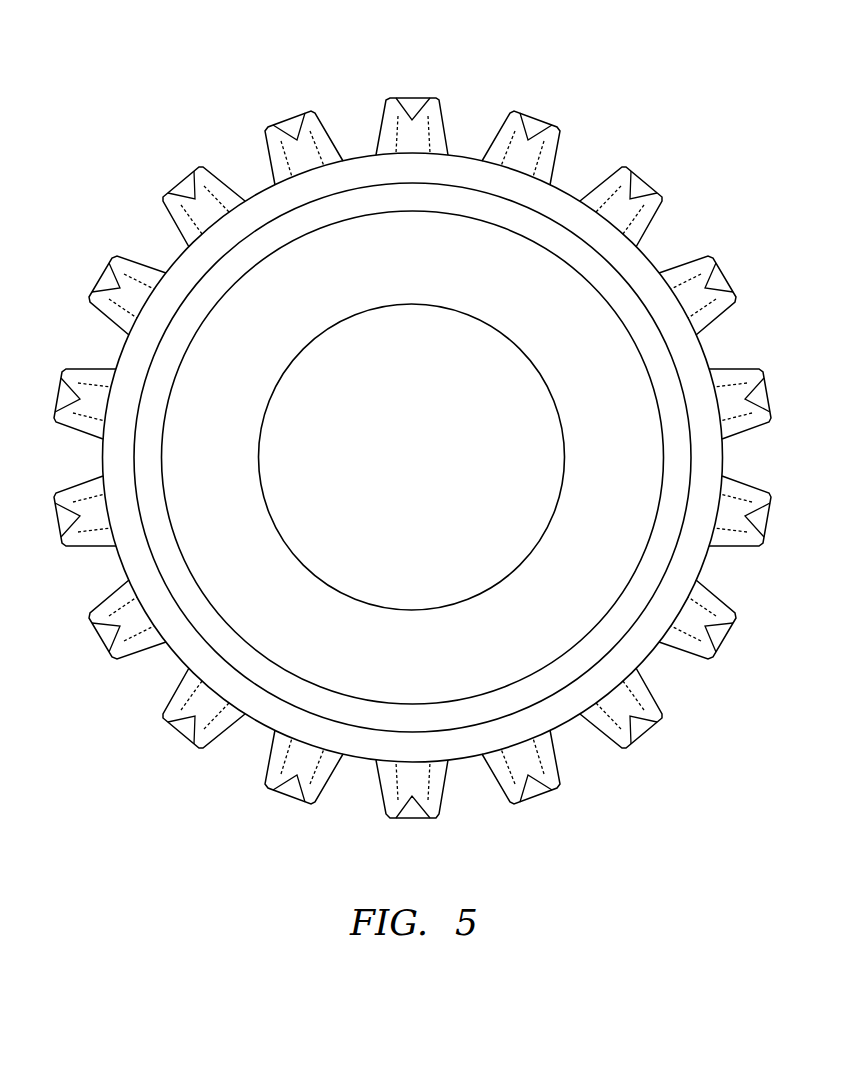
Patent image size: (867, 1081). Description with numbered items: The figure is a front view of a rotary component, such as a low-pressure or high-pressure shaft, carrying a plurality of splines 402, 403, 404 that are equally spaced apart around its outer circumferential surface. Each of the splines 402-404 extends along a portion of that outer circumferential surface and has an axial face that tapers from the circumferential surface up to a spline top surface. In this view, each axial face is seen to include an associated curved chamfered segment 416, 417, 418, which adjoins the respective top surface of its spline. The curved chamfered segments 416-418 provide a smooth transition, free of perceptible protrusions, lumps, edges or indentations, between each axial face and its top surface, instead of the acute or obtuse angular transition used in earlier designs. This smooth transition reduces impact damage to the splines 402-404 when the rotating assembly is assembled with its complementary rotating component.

The spline 402 is at (517, 175).
The spline 403 is at (413, 159).
The spline 404 is at (312, 171).
The curved chamfered segment 416 is at (297, 122).
The curved chamfered segment 417 is at (413, 102).
The curved chamfered segment 418 is at (533, 123).